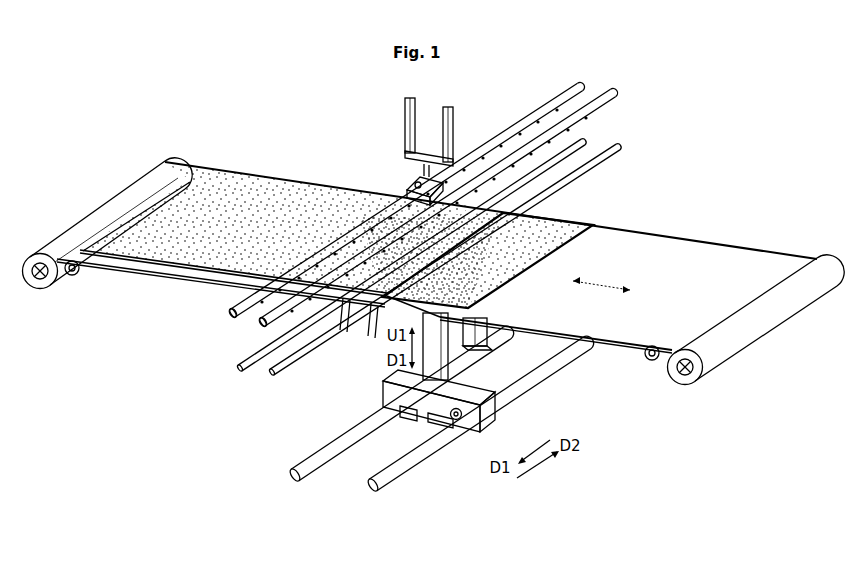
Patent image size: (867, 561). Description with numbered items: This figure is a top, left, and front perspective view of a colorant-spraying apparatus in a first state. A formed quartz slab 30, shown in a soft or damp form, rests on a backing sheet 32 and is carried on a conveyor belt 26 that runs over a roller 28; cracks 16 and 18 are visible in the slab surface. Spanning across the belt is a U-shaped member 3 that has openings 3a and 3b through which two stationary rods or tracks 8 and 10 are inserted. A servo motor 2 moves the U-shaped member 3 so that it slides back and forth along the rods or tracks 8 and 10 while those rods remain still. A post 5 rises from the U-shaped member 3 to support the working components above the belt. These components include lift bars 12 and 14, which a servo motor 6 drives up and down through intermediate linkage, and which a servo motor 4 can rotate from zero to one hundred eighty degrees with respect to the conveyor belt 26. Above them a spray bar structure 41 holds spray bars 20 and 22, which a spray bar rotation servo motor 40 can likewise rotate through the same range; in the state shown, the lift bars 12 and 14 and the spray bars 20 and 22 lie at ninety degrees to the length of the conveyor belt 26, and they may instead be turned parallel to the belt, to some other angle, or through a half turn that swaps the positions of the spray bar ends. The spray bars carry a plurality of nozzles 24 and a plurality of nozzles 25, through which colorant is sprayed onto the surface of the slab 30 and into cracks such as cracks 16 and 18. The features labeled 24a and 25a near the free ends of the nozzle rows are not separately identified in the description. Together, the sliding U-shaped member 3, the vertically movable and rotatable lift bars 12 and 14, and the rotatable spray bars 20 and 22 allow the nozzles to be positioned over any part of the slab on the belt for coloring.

The servo motor 2 is at (482, 428).
The U-shaped member 3 is at (497, 416).
The opening 3a is at (404, 422).
The opening 3b is at (473, 432).
The servo motor 4 is at (493, 345).
The post 5 is at (421, 320).
The servo motor 6 is at (440, 432).
The rod or track 8 is at (358, 423).
The rod or track 10 is at (372, 477).
The lift bar 12 is at (262, 354).
The lift bar 14 is at (276, 372).
The crack 16 is at (345, 310).
The crack 18 is at (373, 312).
The spray bar 20 is at (230, 315).
The spray bar 22 is at (262, 323).
The plurality of nozzles 24 is at (588, 95).
The end portion of first upper rail 24a is at (225, 318).
The plurality of nozzles 25 is at (623, 98).
The end portion of second upper rail 25a is at (255, 330).
The conveyor belt 26 is at (637, 235).
The roller 28 is at (695, 387).
The formed quartz slab 30 is at (240, 186).
The backing sheet 32 is at (190, 166).
The spray bar rotation servo motor 40 is at (407, 184).
The spray bar structure 41 is at (403, 150).